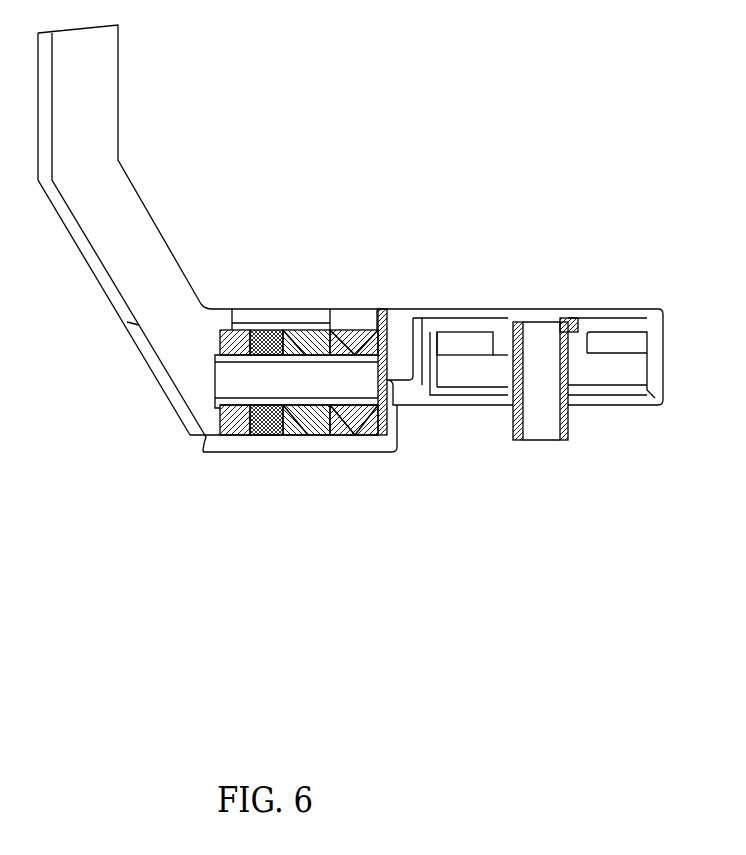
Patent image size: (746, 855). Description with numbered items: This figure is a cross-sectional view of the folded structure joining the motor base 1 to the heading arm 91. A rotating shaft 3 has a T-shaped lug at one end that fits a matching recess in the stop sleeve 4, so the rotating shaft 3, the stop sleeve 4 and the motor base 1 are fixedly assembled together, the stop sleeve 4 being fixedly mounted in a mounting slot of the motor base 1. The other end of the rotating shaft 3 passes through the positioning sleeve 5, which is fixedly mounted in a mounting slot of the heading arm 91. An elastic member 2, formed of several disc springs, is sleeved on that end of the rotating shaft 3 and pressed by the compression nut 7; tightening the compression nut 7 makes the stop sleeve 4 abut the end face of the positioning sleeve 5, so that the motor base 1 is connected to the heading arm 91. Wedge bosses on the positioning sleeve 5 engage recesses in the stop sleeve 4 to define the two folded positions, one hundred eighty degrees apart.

The heading arm 91 is at (130, 242).
The motor base 1 is at (430, 350).
The rotating shaft 3 is at (292, 335).
The compression nut 7 is at (235, 420).
The elastic member 2 is at (263, 432).
The positioning sleeve 5 is at (308, 432).
The stop sleeve 4 is at (362, 420).